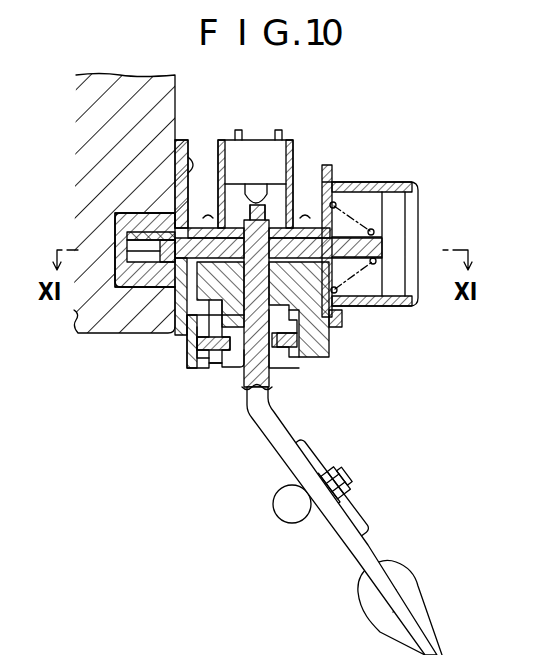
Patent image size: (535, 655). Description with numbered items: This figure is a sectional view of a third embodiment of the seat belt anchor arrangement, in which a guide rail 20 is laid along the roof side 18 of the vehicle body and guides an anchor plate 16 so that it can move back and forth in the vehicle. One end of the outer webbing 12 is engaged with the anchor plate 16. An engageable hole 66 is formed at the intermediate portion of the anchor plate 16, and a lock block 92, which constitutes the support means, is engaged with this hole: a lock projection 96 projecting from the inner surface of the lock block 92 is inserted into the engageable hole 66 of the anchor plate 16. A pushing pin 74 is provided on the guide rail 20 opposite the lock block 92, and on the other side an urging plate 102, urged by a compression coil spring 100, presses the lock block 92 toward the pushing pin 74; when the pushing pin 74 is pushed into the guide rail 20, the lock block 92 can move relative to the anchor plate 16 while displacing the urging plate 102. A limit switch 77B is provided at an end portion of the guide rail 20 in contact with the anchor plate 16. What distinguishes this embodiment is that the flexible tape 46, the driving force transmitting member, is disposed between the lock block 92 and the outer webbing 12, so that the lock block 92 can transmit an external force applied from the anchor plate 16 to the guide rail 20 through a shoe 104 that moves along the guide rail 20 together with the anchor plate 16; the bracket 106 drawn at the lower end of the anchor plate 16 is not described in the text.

The outer webbing 12 is at (414, 580).
The anchor plate 16 is at (253, 426).
The roof side 18 is at (176, 98).
The guide rail 20 is at (329, 357).
The flexible tape 46 is at (200, 366).
The engageable hole 66 is at (244, 365).
The pushing pin 74 is at (342, 247).
The limit switch 77B is at (273, 152).
The lock block 92 is at (226, 246).
The lock projection 96 is at (335, 262).
The compression coil spring 100 is at (127, 232).
The urging plate 102 is at (162, 258).
The shoe 104 is at (180, 256).
The bracket plate 106 is at (360, 530).